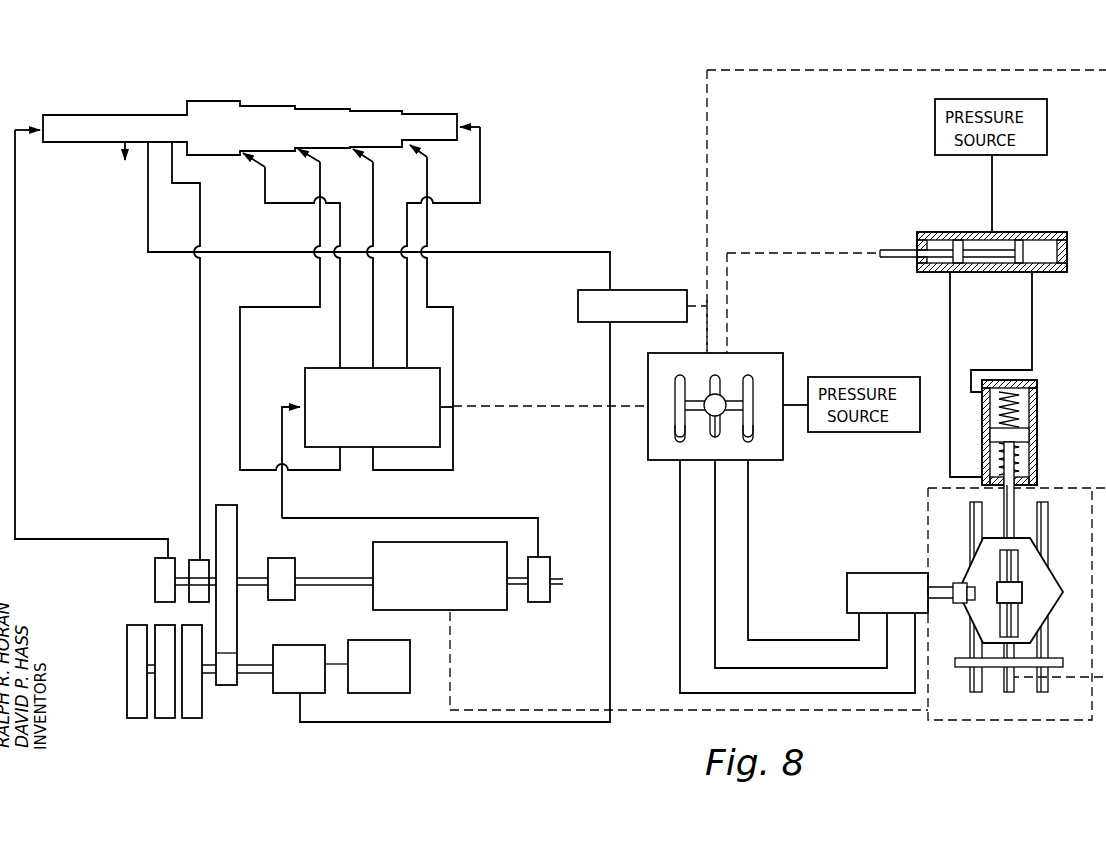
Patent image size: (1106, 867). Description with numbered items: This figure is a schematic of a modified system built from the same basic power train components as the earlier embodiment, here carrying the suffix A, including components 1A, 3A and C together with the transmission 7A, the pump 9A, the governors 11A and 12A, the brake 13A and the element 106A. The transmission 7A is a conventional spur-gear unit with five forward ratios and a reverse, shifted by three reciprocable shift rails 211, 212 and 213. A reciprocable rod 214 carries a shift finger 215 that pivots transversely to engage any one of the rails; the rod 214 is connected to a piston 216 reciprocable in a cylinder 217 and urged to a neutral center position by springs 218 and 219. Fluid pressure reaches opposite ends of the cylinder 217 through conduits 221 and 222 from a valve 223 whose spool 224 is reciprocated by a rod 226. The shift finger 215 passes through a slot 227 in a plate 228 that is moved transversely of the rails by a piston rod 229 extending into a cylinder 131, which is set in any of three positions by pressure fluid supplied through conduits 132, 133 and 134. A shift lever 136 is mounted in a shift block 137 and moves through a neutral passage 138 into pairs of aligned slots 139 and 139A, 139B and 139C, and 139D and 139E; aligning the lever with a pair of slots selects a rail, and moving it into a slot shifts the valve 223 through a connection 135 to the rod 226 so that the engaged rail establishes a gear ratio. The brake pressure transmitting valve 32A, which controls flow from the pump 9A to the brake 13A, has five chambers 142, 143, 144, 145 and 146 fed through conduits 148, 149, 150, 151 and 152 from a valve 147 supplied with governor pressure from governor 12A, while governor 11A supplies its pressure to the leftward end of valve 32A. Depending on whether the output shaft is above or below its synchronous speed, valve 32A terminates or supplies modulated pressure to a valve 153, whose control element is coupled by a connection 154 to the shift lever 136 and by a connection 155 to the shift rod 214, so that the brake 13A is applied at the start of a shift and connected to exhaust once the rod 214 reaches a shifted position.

The brake pressure transmitting valve 32A is at (100, 110).
The chamber 146 is at (213, 100).
The chamber 145 is at (264, 106).
The chamber 144 is at (316, 109).
The chamber 143 is at (372, 111).
The chamber 142 is at (424, 114).
The valve 147 is at (312, 374).
The conduit 148 is at (407, 333).
The conduit 149 is at (453, 458).
The conduit 150 is at (373, 320).
The conduit 151 is at (314, 472).
The conduit 152 is at (340, 300).
The valve 153 is at (630, 293).
The connection 154 is at (712, 318).
The connection 155 is at (707, 86).
The connection 135 is at (782, 251).
The shift lever 136 is at (721, 412).
The shift block 137 is at (723, 404).
The neutral passage 138 is at (690, 399).
The slot 139 is at (681, 376).
The slot 139A is at (678, 431).
The slot 139B is at (716, 425).
The slot 139C is at (716, 375).
The slot 139D is at (753, 380).
The slot 139E is at (749, 437).
The cylinder 131 is at (900, 562).
The conduit 132 is at (750, 581).
The conduit 133 is at (716, 592).
The conduit 134 is at (681, 566).
The governor 11A is at (155, 581).
The pump 9A is at (193, 558).
The turbine 1A is at (146, 618).
The gear 3A is at (237, 642).
The coupling C is at (283, 561).
The brake 13A is at (300, 646).
The manual brake control 106A is at (378, 641).
The transmission 7A is at (465, 604).
The governor 12A is at (548, 566).
The rod 226 is at (898, 250).
The valve 223 is at (1030, 236).
The spool 224 is at (982, 260).
The conduit 222 is at (1032, 334).
The cylinder 217 is at (1038, 404).
The spring 218 is at (998, 411).
The piston 216 is at (1025, 438).
The spring 219 is at (998, 466).
The conduit 221 is at (950, 462).
The shift rail 211 is at (975, 517).
The shift rail 212 is at (1005, 522).
The shift rail 213 is at (1043, 526).
The plate 228 is at (1032, 569).
The piston rod 229 is at (940, 586).
The slot 227 is at (1001, 571).
The shift finger 215 is at (1016, 598).
The reciprocable rod 214 is at (1010, 645).